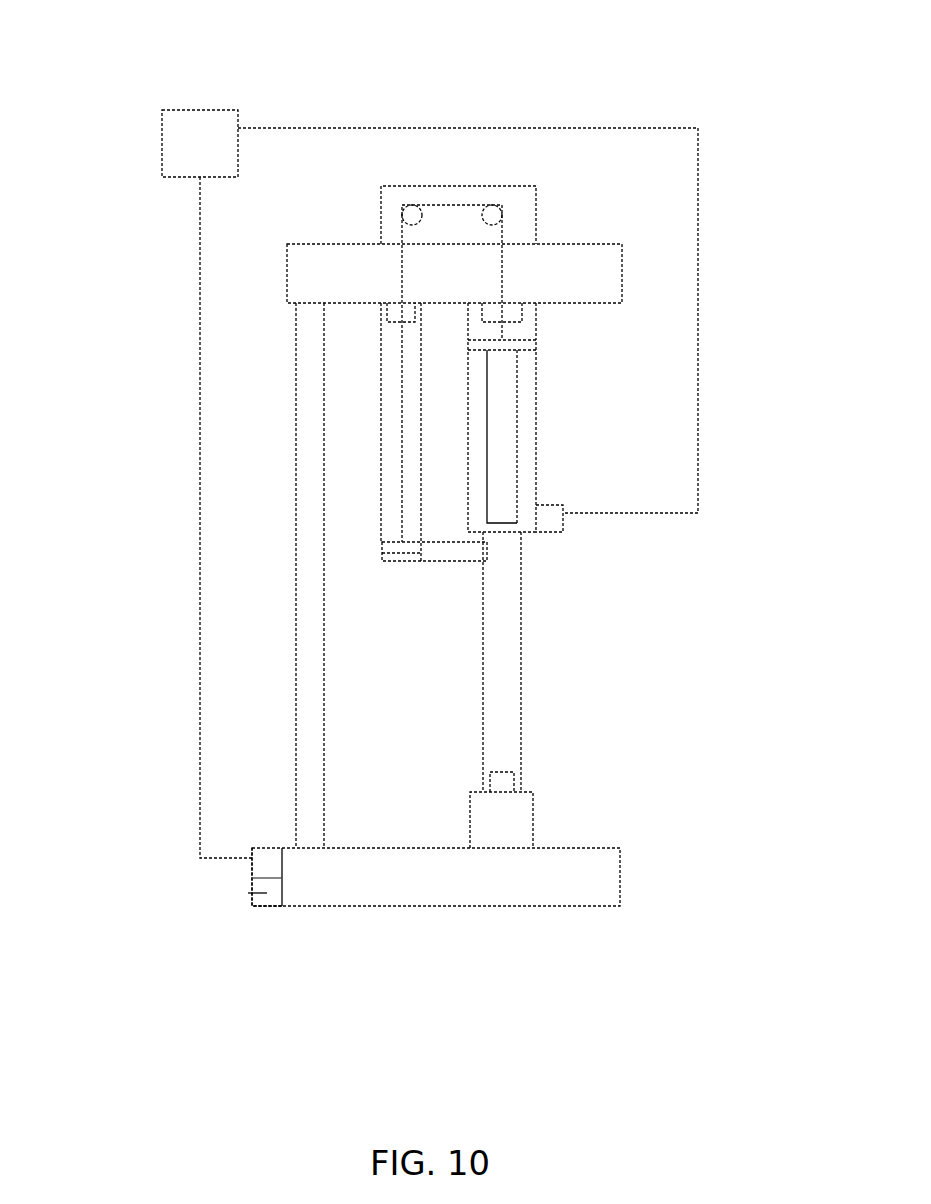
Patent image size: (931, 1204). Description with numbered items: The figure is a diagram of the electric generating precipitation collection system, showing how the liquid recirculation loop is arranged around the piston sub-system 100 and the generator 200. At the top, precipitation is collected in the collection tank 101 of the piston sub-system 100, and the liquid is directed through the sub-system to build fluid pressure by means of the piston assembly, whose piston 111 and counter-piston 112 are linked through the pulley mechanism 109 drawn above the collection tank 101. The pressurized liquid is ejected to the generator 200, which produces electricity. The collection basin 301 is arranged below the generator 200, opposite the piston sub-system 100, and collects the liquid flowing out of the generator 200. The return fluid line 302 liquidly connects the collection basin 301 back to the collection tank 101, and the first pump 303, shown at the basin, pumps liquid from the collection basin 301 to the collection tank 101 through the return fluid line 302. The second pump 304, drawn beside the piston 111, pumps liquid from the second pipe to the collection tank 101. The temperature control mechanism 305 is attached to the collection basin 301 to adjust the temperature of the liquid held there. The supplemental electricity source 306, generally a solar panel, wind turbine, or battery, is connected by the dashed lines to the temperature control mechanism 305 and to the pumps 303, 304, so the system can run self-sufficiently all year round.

The piston sub-system 100 is at (707, 287).
The collection tank 101 is at (338, 277).
The pulley mechanism 109 is at (493, 212).
The piston 111 is at (505, 401).
The counter-piston 112 is at (392, 545).
The generator 200 is at (510, 807).
The collection basin 301 is at (588, 875).
The return fluid line 302 is at (308, 710).
The first pump 303 is at (266, 863).
The second pump 304 is at (551, 521).
The temperature control mechanism 305 is at (262, 893).
The supplemental electricity source 306 is at (190, 138).